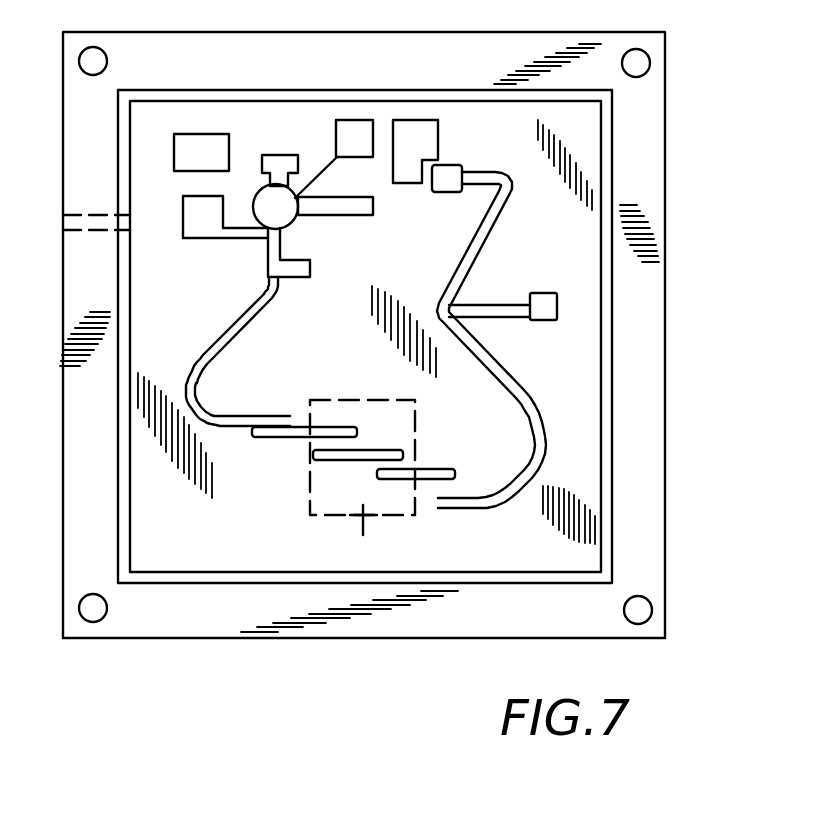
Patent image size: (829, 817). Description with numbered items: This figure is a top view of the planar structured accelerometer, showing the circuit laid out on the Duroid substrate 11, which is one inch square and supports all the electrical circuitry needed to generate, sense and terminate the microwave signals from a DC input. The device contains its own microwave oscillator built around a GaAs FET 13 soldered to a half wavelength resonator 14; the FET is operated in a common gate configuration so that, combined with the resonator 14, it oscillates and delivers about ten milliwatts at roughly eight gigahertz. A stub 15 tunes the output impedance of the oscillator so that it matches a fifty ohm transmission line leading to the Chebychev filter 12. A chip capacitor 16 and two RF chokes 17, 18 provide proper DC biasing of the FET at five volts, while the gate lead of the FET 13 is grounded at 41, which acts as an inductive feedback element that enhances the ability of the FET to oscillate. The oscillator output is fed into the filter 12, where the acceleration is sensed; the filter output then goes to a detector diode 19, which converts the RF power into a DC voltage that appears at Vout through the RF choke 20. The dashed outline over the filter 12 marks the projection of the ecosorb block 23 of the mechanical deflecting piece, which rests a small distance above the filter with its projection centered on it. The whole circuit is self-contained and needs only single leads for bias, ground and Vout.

The Duroid substrate 11 is at (633, 322).
The Chebychev filter 12 is at (297, 448).
The GaAs FET 13 is at (282, 213).
The half wavelength resonator 14 is at (350, 212).
The stub 15 is at (298, 277).
The chip capacitor 16 is at (145, 182).
The RF choke 17 is at (196, 223).
The RF choke 18 is at (365, 128).
The detector diode 19 is at (448, 180).
The RF choke 20 is at (538, 312).
The ecosorb block 23 is at (362, 553).
The ground 41 is at (281, 170).